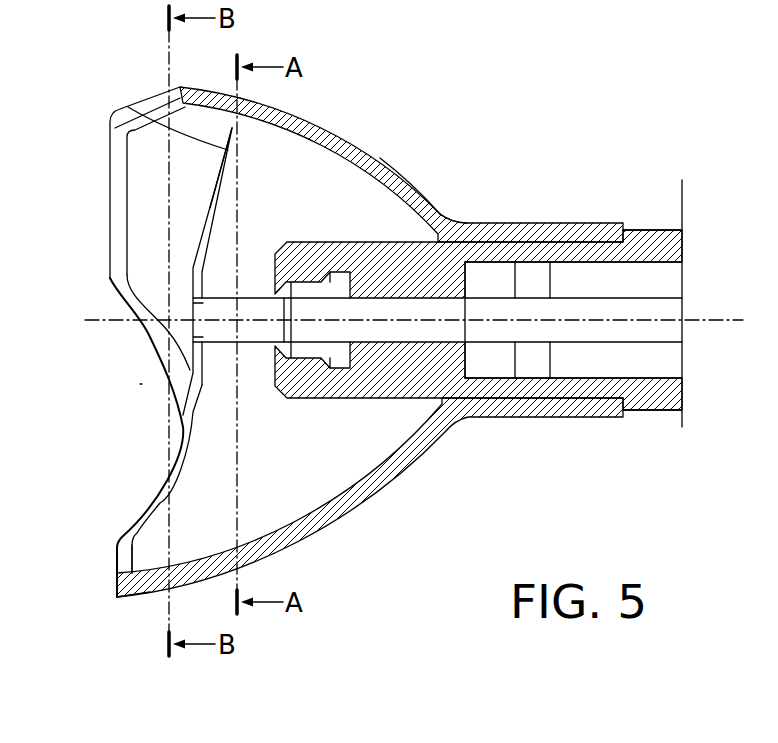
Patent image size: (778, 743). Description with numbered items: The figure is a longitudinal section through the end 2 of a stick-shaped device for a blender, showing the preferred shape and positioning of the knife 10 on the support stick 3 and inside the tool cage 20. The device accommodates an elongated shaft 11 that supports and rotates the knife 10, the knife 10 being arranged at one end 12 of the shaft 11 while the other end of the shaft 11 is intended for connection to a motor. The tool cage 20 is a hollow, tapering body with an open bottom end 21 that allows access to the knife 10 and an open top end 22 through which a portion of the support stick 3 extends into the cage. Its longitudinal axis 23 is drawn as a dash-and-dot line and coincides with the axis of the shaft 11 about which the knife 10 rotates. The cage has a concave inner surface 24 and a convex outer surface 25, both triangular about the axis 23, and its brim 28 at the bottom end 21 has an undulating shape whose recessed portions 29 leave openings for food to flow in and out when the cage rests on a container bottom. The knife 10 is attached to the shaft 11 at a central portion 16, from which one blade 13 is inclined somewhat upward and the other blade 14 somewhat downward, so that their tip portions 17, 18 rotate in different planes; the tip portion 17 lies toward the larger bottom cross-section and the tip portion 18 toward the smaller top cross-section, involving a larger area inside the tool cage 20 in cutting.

The end 2 is at (320, 425).
The support stick 3 is at (653, 243).
The knife 10 is at (214, 208).
The shaft 11 is at (578, 307).
The end of the shaft 12 is at (190, 322).
The blade 13 is at (184, 426).
The blade 14 is at (201, 240).
The central portion 16 is at (190, 308).
The tip portion 17 is at (168, 470).
The tip portion 18 is at (133, 108).
The tool cage 20 is at (330, 132).
The bottom end 21 is at (96, 609).
The top end 22 is at (465, 155).
The longitudinal axis 23 is at (730, 320).
The inner surface 24 is at (163, 562).
The outer surface 25 is at (380, 158).
The brim 28 is at (118, 156).
The recessed portions 29 is at (131, 383).